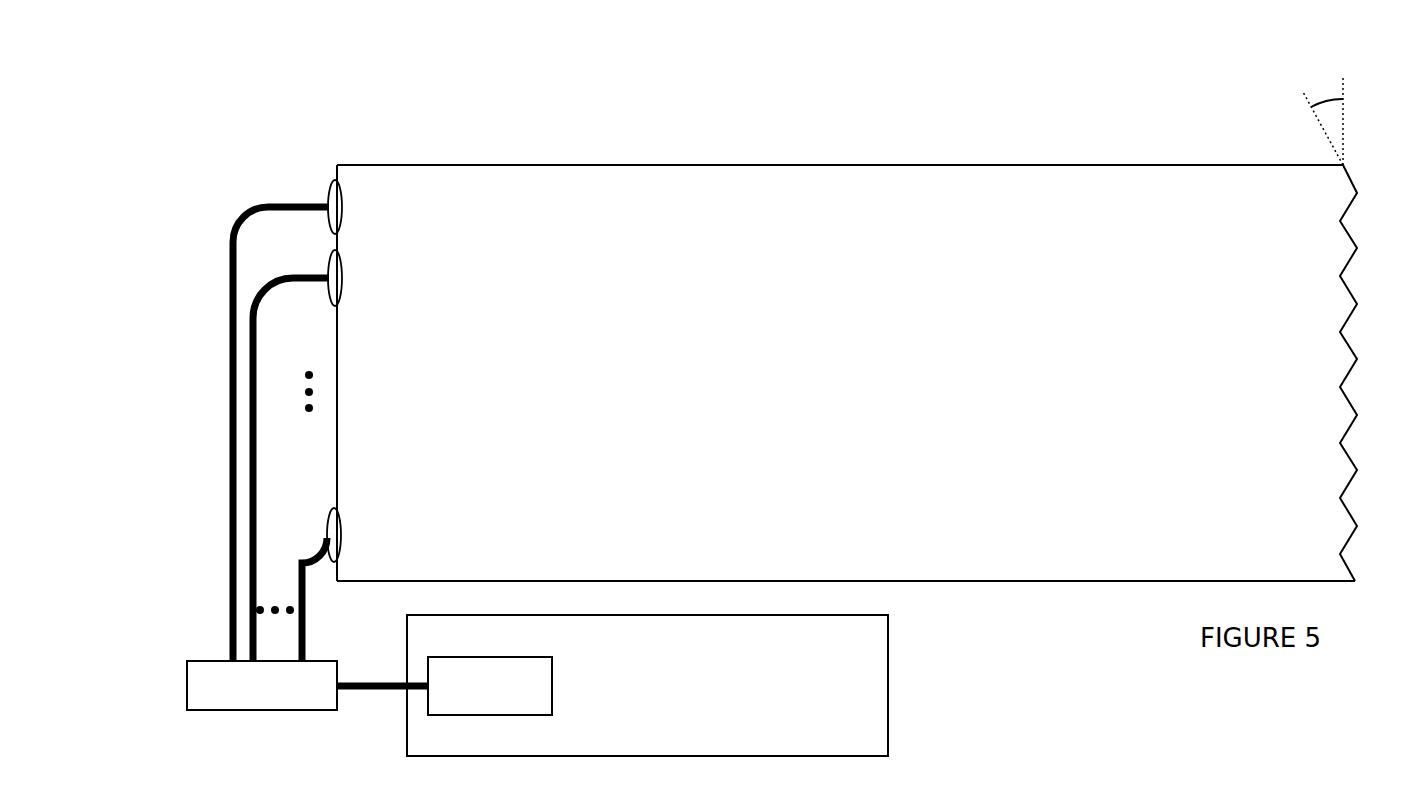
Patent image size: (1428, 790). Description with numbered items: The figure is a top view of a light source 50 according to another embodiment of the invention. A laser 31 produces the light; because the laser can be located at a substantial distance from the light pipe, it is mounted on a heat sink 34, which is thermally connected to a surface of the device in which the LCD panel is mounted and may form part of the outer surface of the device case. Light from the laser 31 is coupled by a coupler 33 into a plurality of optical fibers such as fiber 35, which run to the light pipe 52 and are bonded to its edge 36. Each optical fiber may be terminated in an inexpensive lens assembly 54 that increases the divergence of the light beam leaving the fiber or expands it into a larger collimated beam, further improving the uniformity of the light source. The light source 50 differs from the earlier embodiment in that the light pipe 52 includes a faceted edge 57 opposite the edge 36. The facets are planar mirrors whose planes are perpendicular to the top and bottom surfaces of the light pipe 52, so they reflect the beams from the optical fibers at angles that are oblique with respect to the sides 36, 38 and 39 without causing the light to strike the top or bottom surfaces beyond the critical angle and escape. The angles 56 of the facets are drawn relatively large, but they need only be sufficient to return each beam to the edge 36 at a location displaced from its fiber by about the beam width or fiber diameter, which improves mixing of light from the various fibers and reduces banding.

The laser 31 is at (553, 672).
The coupler 33 is at (186, 683).
The heat sink 34 is at (880, 683).
The optical fiber 35 is at (229, 566).
The edge of light pipe 36 is at (340, 368).
The side of light pipe 38 is at (1042, 582).
The side of light pipe 39 is at (1053, 166).
The light source 50 is at (172, 130).
The light pipe 52 is at (1182, 494).
The lens assembly 54 is at (343, 208).
The angles of the facets 56 is at (1328, 95).
The faceted edge 57 is at (1352, 430).